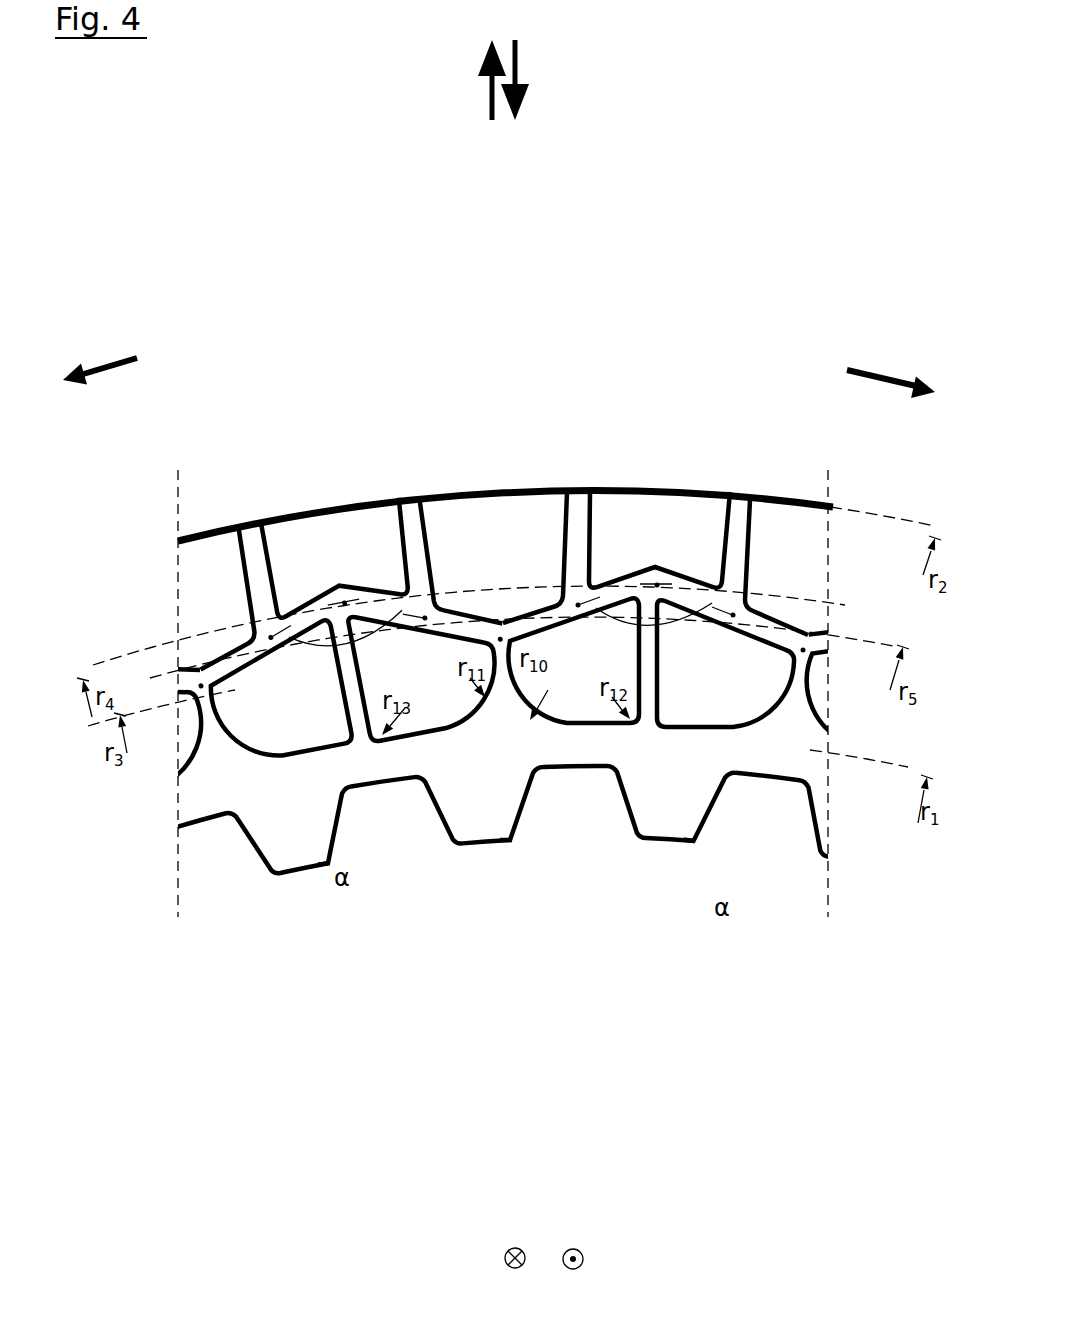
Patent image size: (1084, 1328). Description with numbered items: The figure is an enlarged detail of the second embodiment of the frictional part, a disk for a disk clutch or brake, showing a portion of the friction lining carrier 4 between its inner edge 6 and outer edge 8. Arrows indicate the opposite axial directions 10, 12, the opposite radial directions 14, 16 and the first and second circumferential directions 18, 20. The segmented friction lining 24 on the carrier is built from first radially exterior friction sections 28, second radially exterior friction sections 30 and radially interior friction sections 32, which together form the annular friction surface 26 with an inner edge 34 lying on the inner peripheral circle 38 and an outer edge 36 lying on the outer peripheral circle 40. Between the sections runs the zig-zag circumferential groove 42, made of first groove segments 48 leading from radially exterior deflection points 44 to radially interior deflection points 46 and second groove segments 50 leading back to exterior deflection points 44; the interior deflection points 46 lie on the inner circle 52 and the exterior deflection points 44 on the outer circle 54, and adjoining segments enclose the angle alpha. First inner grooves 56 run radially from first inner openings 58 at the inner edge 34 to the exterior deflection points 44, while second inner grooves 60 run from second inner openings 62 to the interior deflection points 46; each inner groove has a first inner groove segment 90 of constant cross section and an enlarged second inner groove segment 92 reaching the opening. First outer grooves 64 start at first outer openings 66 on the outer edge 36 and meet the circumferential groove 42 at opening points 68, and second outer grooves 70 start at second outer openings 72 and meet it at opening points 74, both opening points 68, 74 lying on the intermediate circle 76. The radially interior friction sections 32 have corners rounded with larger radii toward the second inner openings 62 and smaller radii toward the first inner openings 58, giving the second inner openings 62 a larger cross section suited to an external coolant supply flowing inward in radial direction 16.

The friction lining carrier 4 is at (178, 826).
The inner edge 6 is at (193, 836).
The outer edge 8 is at (233, 517).
The axial direction 10 is at (582, 1268).
The axial direction 12 is at (505, 1268).
The radial direction 14 is at (488, 93).
The radial direction 16 is at (519, 66).
The first circumferential direction 18 is at (108, 362).
The second circumferential direction 20 is at (872, 372).
The friction lining 24 is at (177, 773).
The friction surface 26 is at (187, 755).
The first radially exterior friction section 28 is at (490, 500).
The second radially exterior friction section 30 is at (330, 530).
The radially interior friction section 32 is at (272, 862).
The inner edge 34 is at (815, 752).
The outer edge 36 is at (686, 492).
The inner peripheral circle 38 is at (905, 766).
The outer peripheral circle 40 is at (900, 521).
The circumferential groove 42 is at (773, 622).
The radially exterior deflection point 44 is at (340, 533).
The radially interior deflection point 46 is at (499, 636).
The first groove segment 48 is at (305, 652).
The second groove segment 50 is at (455, 707).
The inner circle 52 is at (88, 727).
The outer circle 54 is at (95, 672).
The first inner groove 56 is at (350, 690).
The first inner opening 58 is at (369, 752).
The second inner groove 60 is at (218, 744).
The second inner opening 62 is at (482, 742).
The first outer groove 64 is at (578, 530).
The first outer opening 66 is at (570, 485).
The opening point 68 is at (278, 760).
The second outer groove 70 is at (417, 490).
The second outer opening 72 is at (413, 482).
The opening point 74 is at (413, 667).
The intermediate circle 76 is at (895, 641).
The first inner groove segment 90 is at (510, 706).
The second inner groove segment 92 is at (505, 700).